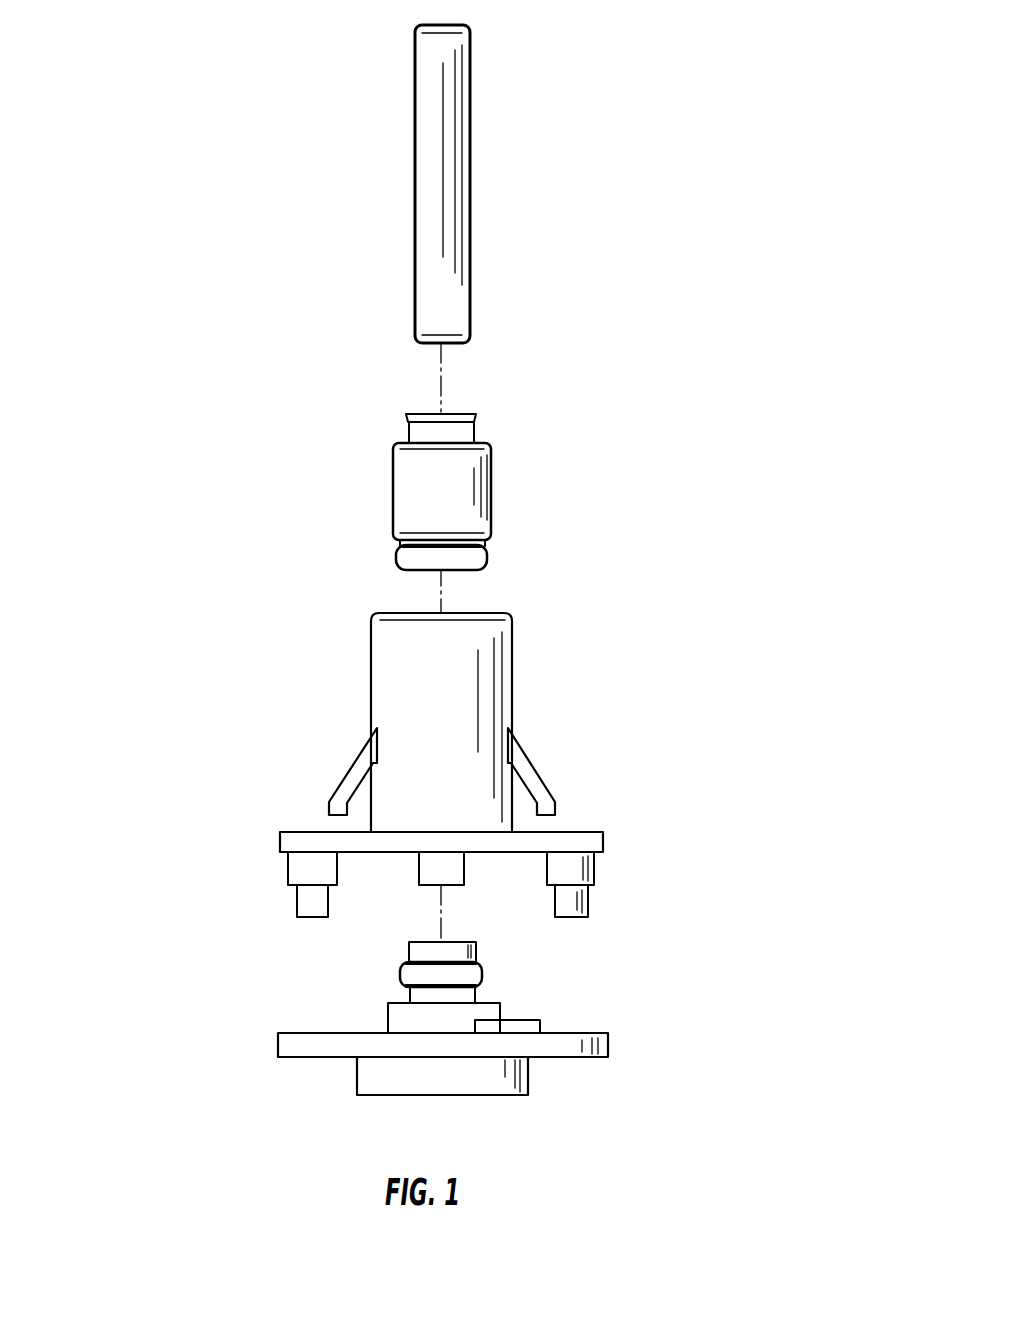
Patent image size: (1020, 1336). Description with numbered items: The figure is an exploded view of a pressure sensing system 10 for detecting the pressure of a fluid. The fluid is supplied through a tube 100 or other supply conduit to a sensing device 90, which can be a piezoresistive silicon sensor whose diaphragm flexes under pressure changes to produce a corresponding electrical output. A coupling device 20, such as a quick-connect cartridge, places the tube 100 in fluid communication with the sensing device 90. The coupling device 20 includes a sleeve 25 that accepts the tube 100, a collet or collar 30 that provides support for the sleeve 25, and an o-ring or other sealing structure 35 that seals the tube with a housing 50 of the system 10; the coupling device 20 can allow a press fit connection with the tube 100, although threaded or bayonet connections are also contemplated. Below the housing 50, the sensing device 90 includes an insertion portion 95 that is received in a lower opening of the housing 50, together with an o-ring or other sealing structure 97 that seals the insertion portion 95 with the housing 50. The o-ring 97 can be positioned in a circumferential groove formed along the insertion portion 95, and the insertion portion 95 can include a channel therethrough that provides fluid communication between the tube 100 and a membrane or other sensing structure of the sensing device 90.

The pressure sensing system 10 is at (487, 743).
The coupling device 20 is at (436, 474).
The sleeve 25 is at (476, 428).
The collet or collar 30 is at (491, 512).
The o-ring or sealing structure 35 is at (487, 558).
The housing 50 is at (273, 698).
The sensing device 90 is at (414, 961).
The insertion portion 95 is at (409, 955).
The o-ring or sealing structure 97 is at (584, 923).
The tube 100 is at (365, 223).